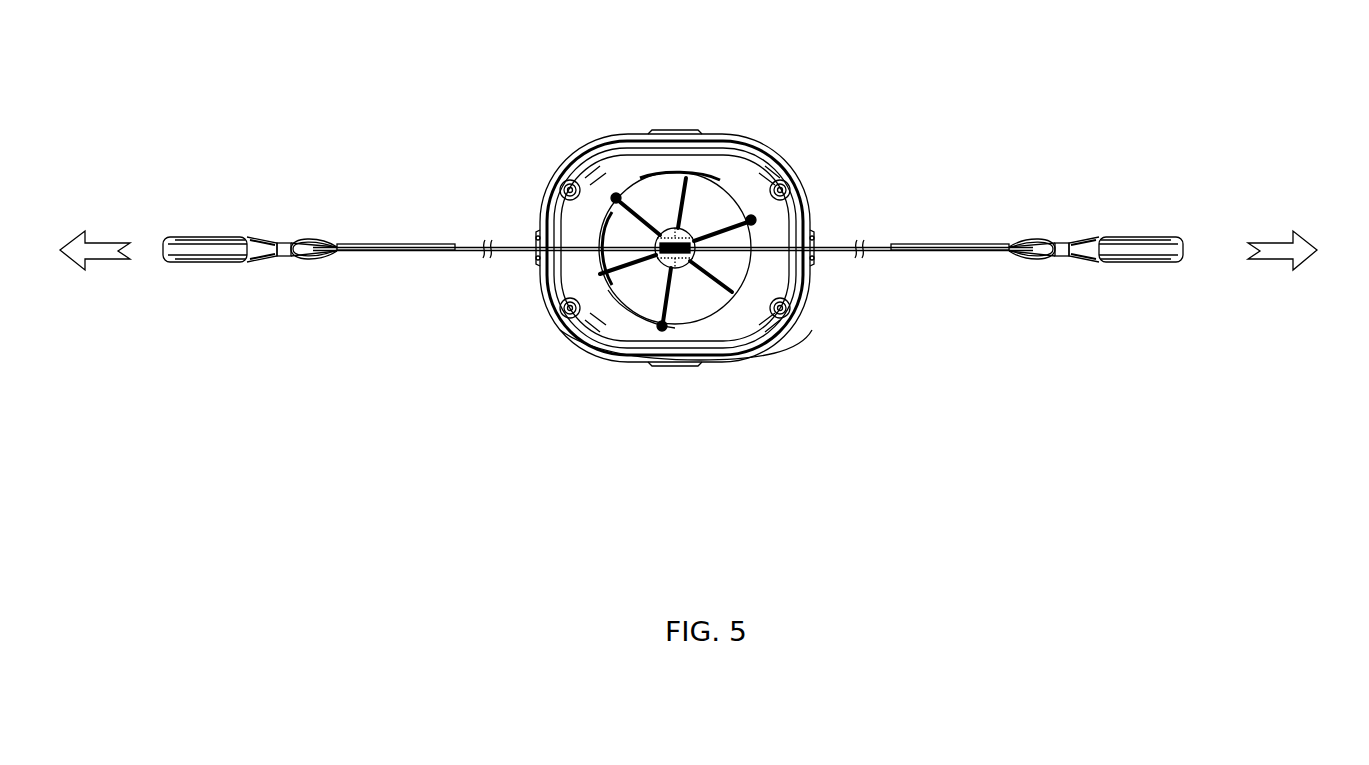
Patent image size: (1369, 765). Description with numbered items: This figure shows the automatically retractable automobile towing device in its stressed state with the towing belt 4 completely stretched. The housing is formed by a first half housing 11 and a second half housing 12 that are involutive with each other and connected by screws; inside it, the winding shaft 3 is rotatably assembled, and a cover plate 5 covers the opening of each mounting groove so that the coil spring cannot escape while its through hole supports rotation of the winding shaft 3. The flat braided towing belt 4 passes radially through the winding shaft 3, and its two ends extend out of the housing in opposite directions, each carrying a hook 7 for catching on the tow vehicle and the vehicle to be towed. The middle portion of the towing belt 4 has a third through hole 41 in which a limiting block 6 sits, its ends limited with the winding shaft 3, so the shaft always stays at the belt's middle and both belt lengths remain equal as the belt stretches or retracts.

The winding shaft 3 is at (655, 240).
The towing belt 4 is at (420, 252).
The cover plate 5 is at (720, 185).
The limiting block 6 is at (655, 255).
The hook 7 is at (211, 258).
The first half housing 11 is at (605, 152).
The second half housing 12 is at (698, 362).
The third through hole 41 is at (650, 258).